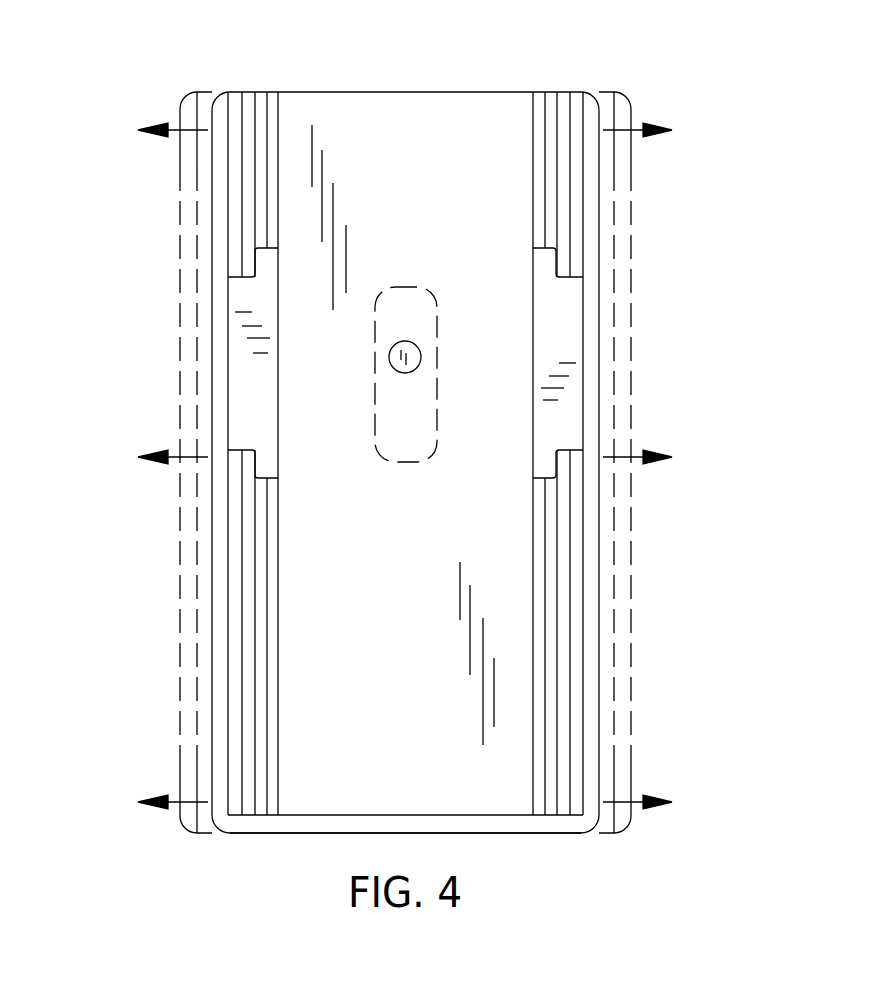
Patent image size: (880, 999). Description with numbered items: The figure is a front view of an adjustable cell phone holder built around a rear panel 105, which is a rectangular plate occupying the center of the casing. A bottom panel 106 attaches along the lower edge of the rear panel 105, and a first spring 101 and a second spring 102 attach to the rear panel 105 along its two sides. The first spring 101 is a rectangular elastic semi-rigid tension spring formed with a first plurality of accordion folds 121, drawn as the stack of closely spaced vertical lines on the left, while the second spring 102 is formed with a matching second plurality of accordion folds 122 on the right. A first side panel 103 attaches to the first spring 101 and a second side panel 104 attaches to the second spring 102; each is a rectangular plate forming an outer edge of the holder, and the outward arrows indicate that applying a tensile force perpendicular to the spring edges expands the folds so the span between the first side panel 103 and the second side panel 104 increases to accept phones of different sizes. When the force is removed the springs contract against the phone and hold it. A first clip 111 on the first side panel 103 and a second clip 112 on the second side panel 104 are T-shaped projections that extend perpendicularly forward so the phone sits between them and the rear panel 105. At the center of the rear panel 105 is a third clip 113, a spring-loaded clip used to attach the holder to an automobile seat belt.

The first spring 101 is at (258, 100).
The second spring 102 is at (556, 103).
The first side panel 103 is at (180, 327).
The second side panel 104 is at (630, 317).
The rear panel 105 is at (425, 118).
The bottom panel 106 is at (490, 825).
The first clip 111 is at (245, 387).
The second clip 112 is at (548, 395).
The third clip 113 is at (400, 298).
The first plurality of accordion folds 121 is at (253, 708).
The second plurality of accordion folds 122 is at (546, 743).